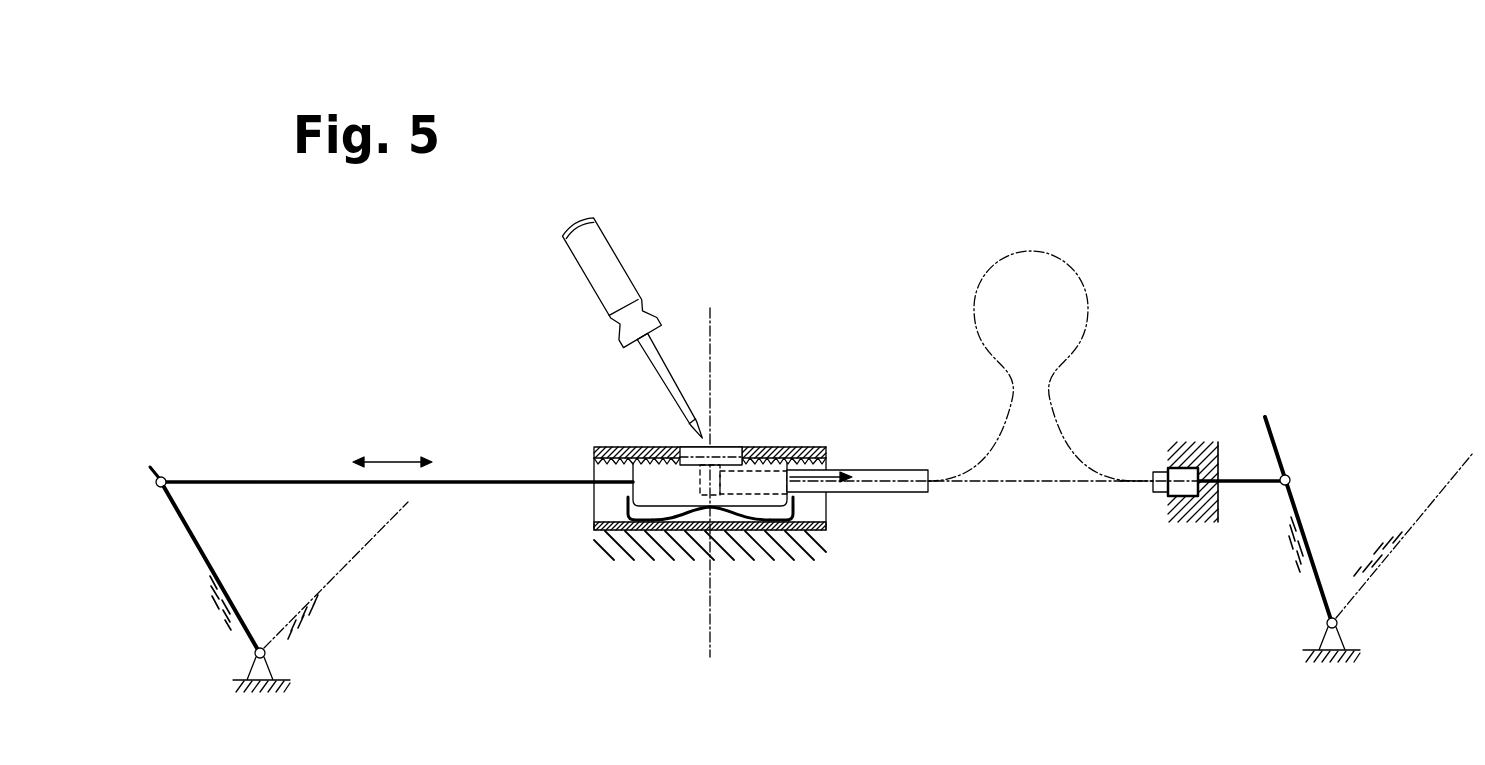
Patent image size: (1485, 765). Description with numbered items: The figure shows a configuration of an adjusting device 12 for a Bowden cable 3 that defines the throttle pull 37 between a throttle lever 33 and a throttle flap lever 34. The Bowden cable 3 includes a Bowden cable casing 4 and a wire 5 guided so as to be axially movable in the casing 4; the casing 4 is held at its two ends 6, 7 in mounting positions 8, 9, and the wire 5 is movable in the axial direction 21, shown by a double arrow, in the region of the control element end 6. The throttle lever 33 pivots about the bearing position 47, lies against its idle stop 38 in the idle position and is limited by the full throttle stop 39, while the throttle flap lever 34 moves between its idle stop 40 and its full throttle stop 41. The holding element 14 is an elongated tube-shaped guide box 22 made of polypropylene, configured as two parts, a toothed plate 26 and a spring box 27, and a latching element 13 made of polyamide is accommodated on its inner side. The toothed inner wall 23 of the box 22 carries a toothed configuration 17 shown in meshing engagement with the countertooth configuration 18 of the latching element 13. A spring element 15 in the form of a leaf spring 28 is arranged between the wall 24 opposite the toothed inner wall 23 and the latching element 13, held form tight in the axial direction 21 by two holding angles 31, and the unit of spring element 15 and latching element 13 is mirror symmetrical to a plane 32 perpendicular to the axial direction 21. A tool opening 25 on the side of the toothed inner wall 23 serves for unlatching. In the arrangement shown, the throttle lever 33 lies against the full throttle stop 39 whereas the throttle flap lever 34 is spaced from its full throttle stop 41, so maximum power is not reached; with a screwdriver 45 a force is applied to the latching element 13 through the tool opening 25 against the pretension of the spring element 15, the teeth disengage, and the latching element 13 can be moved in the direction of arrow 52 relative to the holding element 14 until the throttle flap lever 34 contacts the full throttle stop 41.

The Bowden cable 3 is at (964, 323).
The Bowden cable casing 4 is at (910, 470).
The wire 5 is at (276, 480).
The control element end 6 is at (797, 467).
The end of Bowden cable casing 7 is at (1150, 503).
The mounting position 8 is at (650, 547).
The mounting position 9 is at (1190, 440).
The adjusting device 12 is at (758, 373).
The latching element 13 is at (645, 487).
The holding element 14 is at (660, 447).
The spring element 15 is at (735, 511).
The toothed configuration 17 is at (772, 458).
The countertooth configuration 18 is at (782, 460).
The axial direction 21 is at (393, 460).
The guide box 22 is at (594, 472).
The toothed inner wall 23 is at (624, 453).
The wall 24 is at (602, 533).
The tool opening 25 is at (723, 452).
The toothed plate 26 is at (596, 452).
The spring box 27 is at (808, 510).
The leaf spring 28 is at (752, 520).
The holding angles 31 is at (626, 507).
The plane 32 is at (708, 630).
The throttle lever 33 is at (193, 522).
The throttle flap lever 34 is at (1297, 494).
The throttle pull 37 is at (1088, 312).
The idle stop 38 is at (330, 615).
The full throttle stop 39 is at (210, 598).
The idle stop 40 is at (1402, 556).
The full throttle stop 41 is at (1283, 550).
The screwdriver 45 is at (623, 273).
The bearing position 47 is at (268, 655).
The arrow 52 is at (835, 470).